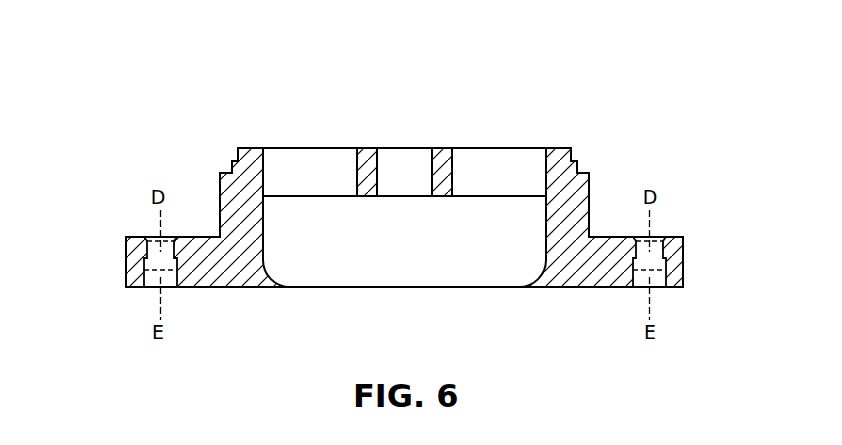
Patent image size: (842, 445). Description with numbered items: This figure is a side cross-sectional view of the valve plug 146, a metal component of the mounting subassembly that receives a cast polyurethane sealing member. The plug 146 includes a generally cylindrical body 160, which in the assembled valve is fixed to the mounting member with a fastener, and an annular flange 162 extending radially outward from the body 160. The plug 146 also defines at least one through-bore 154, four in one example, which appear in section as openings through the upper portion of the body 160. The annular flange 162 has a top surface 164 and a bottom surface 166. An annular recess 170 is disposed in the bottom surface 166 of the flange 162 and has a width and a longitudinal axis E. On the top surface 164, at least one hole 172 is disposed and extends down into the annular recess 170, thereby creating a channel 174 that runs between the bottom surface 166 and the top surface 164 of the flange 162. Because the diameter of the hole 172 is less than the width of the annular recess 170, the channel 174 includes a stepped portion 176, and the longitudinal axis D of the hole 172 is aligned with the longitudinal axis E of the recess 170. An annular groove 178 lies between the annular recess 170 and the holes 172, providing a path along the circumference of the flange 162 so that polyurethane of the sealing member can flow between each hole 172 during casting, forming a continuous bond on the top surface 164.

The plug 146 is at (636, 118).
The through-bore 154 is at (266, 167).
The cylindrical body 160 is at (237, 203).
The annular flange 162 is at (206, 279).
The top surface 164 is at (131, 237).
The bottom surface 166 is at (133, 290).
The annular recess 170 is at (658, 288).
The hole 172 is at (658, 236).
The channel 174 is at (680, 259).
The stepped portion 176 is at (633, 257).
The annular groove 178 is at (143, 262).